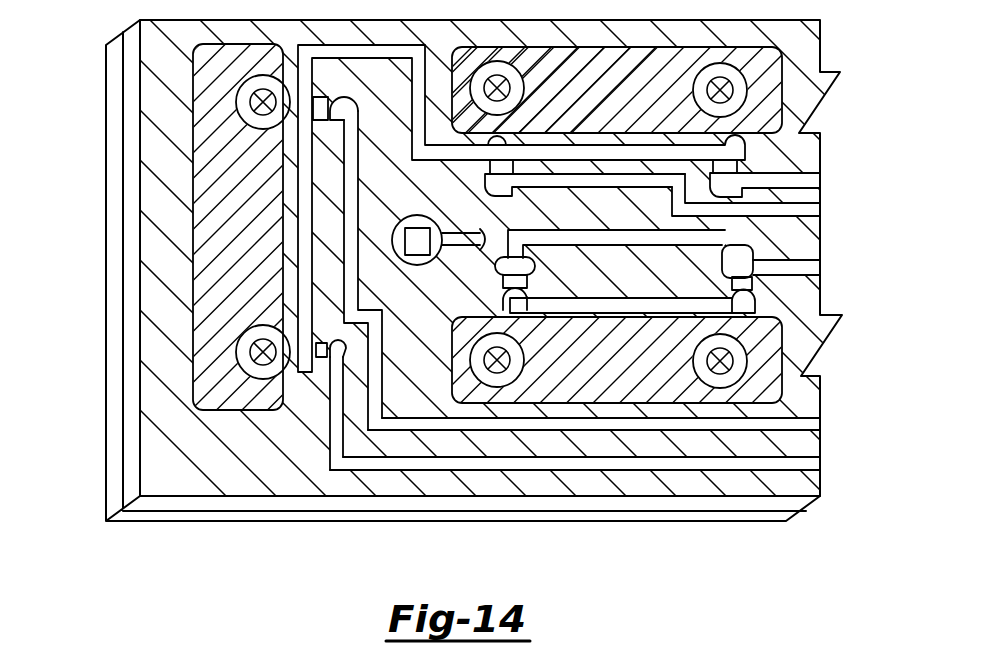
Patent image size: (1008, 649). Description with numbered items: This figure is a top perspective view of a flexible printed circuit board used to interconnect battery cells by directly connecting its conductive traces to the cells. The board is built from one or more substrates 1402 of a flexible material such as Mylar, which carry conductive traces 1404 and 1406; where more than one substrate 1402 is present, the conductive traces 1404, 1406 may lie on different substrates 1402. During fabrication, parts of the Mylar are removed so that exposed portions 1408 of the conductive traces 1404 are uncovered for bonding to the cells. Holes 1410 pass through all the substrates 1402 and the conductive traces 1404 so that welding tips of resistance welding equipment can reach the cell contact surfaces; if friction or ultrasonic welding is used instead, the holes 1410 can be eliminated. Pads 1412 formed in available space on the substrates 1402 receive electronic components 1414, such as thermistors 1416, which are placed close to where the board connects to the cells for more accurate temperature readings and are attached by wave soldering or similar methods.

The substrate 1402 is at (167, 498).
The conductive trace 1404 is at (212, 241).
The conductive trace 1406 is at (806, 464).
The exposed portions of conductive traces 1408 is at (747, 352).
The hole 1410 is at (693, 80).
The pad 1412 is at (775, 312).
The electronic component 1414 is at (413, 226).
The thermistor 1416 is at (347, 100).